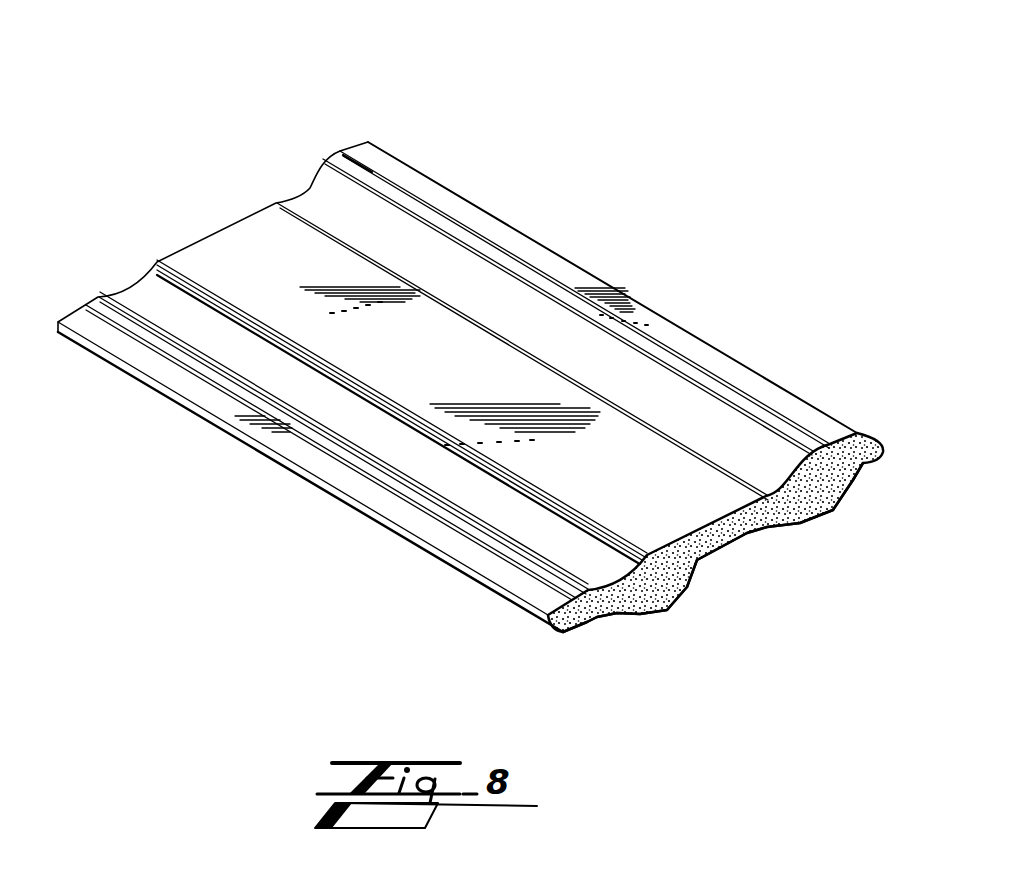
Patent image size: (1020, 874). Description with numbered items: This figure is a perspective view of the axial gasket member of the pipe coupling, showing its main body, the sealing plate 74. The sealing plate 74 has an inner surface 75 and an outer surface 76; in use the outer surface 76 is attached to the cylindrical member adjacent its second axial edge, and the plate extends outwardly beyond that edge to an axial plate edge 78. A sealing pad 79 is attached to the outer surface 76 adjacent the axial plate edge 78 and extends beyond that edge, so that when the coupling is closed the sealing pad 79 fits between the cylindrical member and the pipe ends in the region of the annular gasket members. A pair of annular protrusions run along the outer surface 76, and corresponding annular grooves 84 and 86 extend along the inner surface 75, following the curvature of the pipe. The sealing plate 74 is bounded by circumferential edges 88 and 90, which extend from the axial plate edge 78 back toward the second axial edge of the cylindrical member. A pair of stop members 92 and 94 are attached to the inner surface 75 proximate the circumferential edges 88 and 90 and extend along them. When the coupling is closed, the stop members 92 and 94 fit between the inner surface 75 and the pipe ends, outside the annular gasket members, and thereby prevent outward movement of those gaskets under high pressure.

The sealing plate 74 is at (443, 93).
The inner surface 75 is at (211, 243).
The outer surface 76 is at (268, 458).
The axial plate edge 78 is at (710, 517).
The sealing pad 79 is at (740, 533).
The annular groove 84 is at (312, 190).
The annular groove 86 is at (140, 286).
The circumferential edge 88 is at (654, 310).
The circumferential edge 90 is at (166, 390).
The stop member 92 is at (438, 218).
The stop member 94 is at (390, 478).